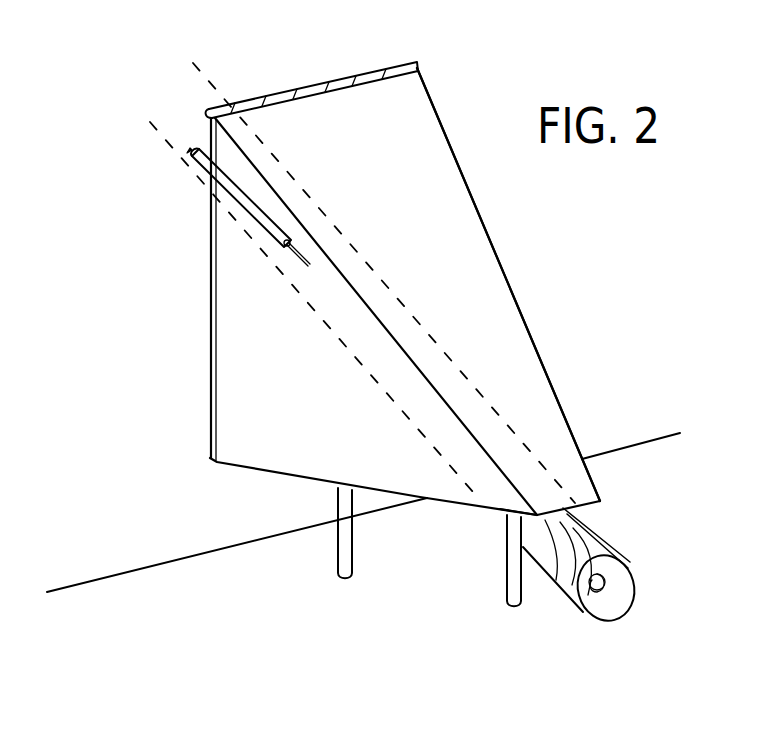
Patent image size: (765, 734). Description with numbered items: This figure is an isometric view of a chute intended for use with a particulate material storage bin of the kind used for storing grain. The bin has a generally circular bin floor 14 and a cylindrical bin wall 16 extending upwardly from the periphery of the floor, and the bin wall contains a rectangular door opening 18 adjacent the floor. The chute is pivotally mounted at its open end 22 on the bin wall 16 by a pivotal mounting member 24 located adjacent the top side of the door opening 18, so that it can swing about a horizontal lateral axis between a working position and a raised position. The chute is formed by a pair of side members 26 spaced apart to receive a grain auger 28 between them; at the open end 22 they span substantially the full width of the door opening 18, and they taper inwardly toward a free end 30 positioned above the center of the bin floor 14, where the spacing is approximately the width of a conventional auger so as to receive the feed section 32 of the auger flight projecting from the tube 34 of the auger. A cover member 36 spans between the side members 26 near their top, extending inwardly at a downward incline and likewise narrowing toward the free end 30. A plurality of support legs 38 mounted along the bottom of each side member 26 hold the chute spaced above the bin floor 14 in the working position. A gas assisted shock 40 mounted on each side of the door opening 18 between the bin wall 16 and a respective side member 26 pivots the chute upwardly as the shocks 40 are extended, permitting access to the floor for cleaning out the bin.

The bin floor 14 is at (268, 584).
The bin wall 16 is at (120, 407).
The door opening 18 is at (208, 317).
The open end 22 is at (218, 275).
The pivotal mounting member 24 is at (340, 77).
The side members 26 is at (297, 450).
The grain auger 28 is at (215, 92).
The free end 30 is at (580, 478).
The feed section 32 is at (595, 537).
The tube 34 is at (503, 517).
The cover member 36 is at (490, 308).
The support legs 38 is at (352, 578).
The gas assisted shock 40 is at (243, 212).